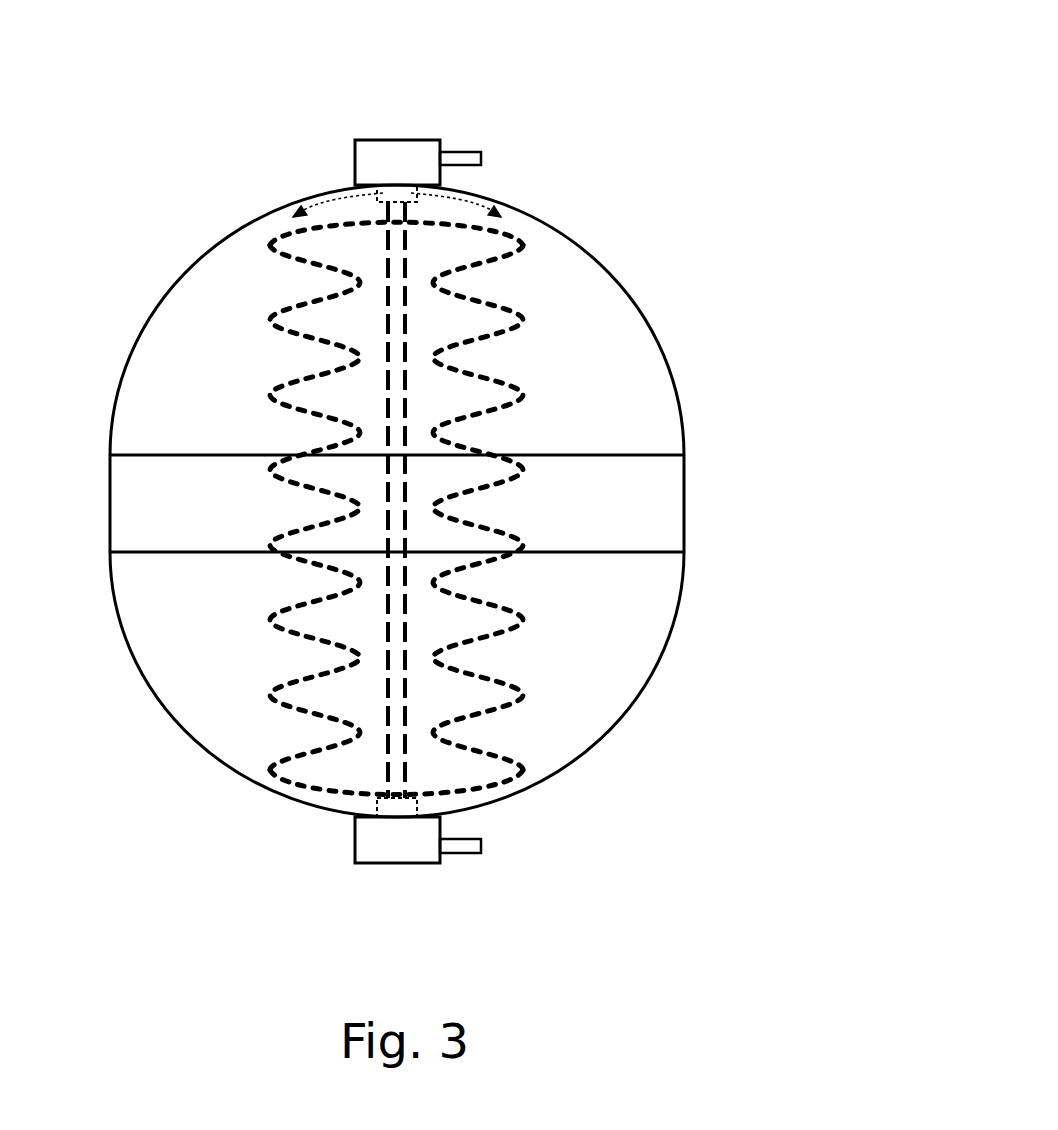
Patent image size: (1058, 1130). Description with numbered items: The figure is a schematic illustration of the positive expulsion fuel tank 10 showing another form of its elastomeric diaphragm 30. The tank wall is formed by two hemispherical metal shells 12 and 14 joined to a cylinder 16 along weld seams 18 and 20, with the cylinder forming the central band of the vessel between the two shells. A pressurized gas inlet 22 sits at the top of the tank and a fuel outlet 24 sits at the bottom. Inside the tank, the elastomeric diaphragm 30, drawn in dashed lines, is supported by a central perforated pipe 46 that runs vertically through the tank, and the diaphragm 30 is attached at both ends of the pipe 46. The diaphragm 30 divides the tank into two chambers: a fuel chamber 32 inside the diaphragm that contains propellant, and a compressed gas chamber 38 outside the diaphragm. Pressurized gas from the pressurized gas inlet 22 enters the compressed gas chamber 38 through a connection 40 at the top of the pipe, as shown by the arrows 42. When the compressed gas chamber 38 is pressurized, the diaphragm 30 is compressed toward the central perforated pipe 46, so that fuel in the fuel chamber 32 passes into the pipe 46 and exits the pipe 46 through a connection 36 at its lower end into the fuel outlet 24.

The positive expulsion fuel tank 10 is at (656, 105).
The hemispherical metal shell 12 is at (592, 328).
The hemispherical metal shell 14 is at (580, 672).
The cylinder 16 is at (462, 504).
The weld seam 18 is at (637, 455).
The weld seam 20 is at (613, 553).
The pressurized gas inlet 22 is at (393, 162).
The fuel outlet 24 is at (407, 832).
The elastomeric diaphragm 30 is at (286, 508).
The fuel chamber 32 is at (340, 320).
The connection 36 is at (385, 818).
The compressed gas chamber 38 is at (187, 372).
The connection 40 is at (388, 188).
The arrows 42 is at (322, 197).
The central perforated pipe 46 is at (395, 668).